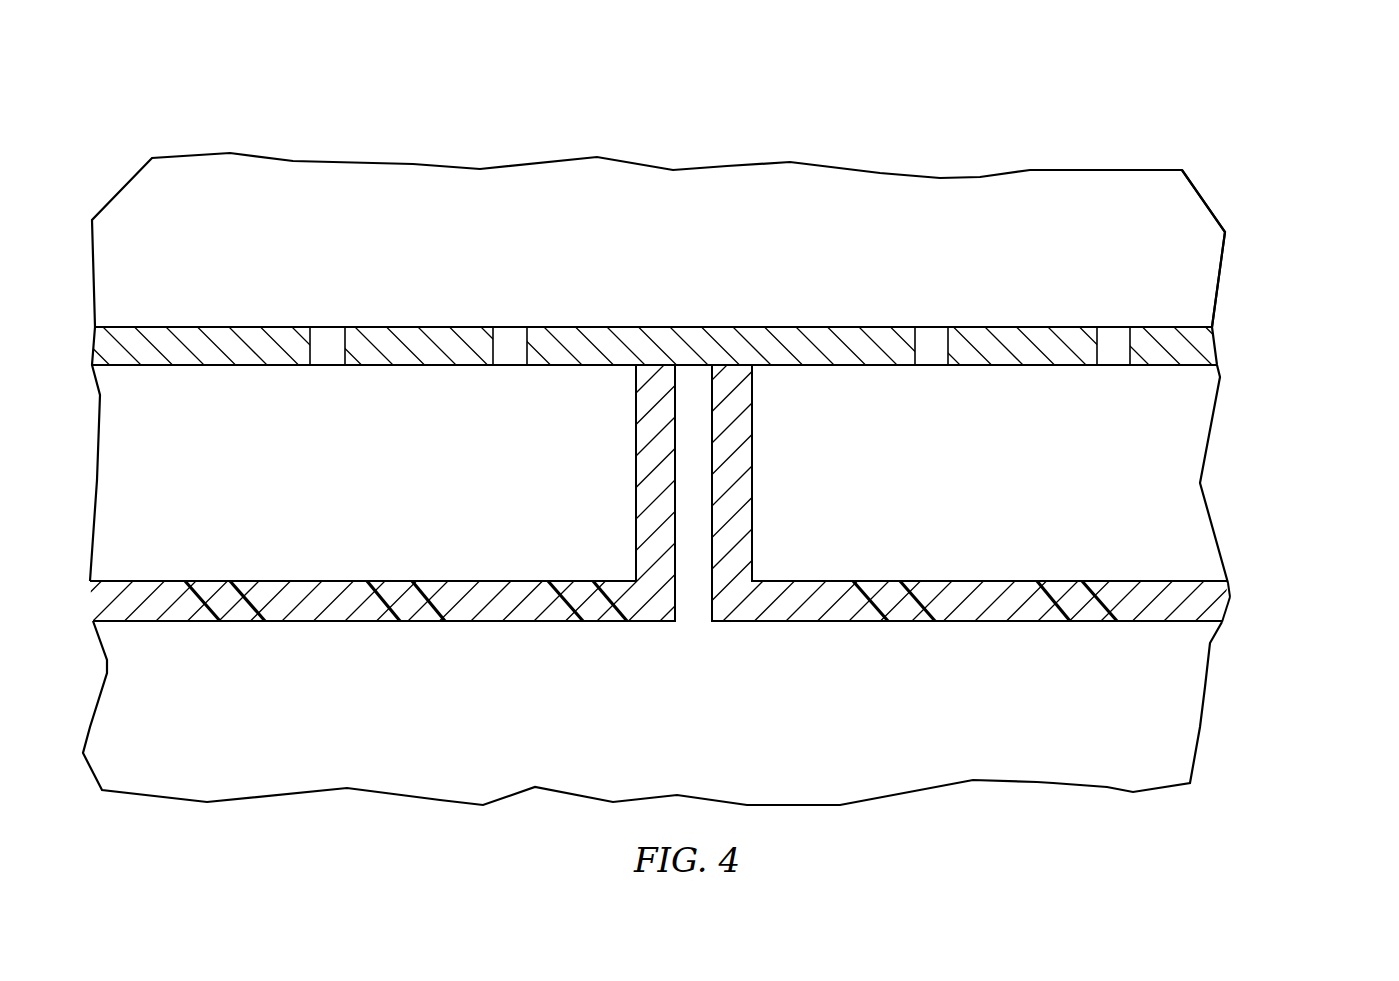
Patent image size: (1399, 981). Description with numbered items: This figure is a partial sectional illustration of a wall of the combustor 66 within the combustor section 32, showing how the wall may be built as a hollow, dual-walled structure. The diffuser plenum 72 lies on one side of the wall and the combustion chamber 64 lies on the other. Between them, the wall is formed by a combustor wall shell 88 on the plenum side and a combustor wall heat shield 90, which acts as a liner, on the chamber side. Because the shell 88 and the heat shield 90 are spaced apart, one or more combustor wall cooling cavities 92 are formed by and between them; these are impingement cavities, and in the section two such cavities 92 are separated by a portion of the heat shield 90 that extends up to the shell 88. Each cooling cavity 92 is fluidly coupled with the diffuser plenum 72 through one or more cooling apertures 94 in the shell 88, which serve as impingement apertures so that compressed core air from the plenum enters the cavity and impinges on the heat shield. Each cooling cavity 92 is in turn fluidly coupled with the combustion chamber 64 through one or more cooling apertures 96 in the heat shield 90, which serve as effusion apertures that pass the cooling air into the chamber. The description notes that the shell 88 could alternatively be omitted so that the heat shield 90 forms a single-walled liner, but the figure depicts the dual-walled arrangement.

The combustor section 32 is at (659, 327).
The diffuser plenum 72 is at (680, 252).
The combustion chamber 64 is at (698, 745).
The combustor 66 is at (1201, 310).
The combustor wall shell 88 is at (1237, 346).
The combustor wall heat shield 90 is at (1250, 597).
The combustor wall cooling cavity 92 is at (420, 509).
The cooling aperture 94 is at (328, 355).
The cooling aperture 96 is at (240, 610).